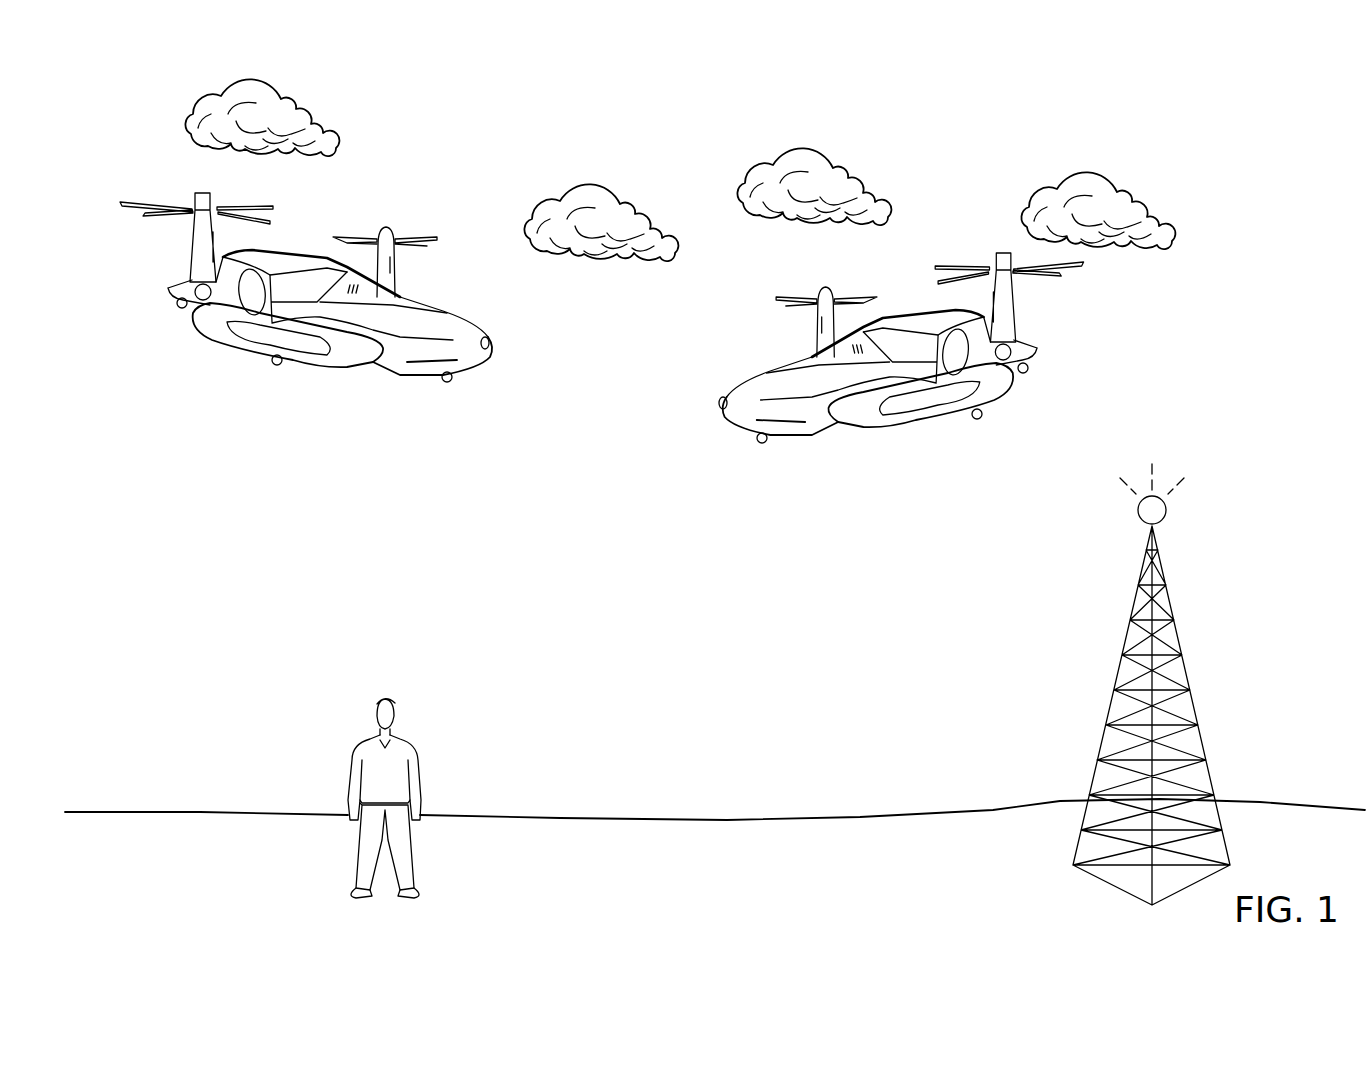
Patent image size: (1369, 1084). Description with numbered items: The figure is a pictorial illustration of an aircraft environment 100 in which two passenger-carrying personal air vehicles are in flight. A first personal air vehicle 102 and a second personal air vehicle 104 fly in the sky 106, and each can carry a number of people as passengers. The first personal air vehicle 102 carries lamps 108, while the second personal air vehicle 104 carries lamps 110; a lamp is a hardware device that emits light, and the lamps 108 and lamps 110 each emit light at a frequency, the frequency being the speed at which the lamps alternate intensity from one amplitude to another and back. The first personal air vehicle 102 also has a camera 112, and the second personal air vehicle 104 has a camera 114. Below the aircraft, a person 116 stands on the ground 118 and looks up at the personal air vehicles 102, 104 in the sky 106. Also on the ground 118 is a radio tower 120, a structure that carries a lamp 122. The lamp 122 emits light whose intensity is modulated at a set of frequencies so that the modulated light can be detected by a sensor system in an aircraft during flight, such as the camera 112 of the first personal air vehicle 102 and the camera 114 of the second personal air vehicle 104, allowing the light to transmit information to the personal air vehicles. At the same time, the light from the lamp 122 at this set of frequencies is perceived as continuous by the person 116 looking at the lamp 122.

The aircraft environment 100 is at (1203, 152).
The personal air vehicle 102 is at (447, 310).
The personal air vehicle 104 is at (757, 375).
The sky 106 is at (1227, 321).
The lamps 108 is at (181, 309).
The lamps 110 is at (760, 444).
The camera 112 is at (493, 337).
The camera 114 is at (717, 398).
The person 116 is at (362, 843).
The ground 118 is at (205, 810).
The radio tower 120 is at (1198, 705).
The lamp 122 is at (1167, 512).